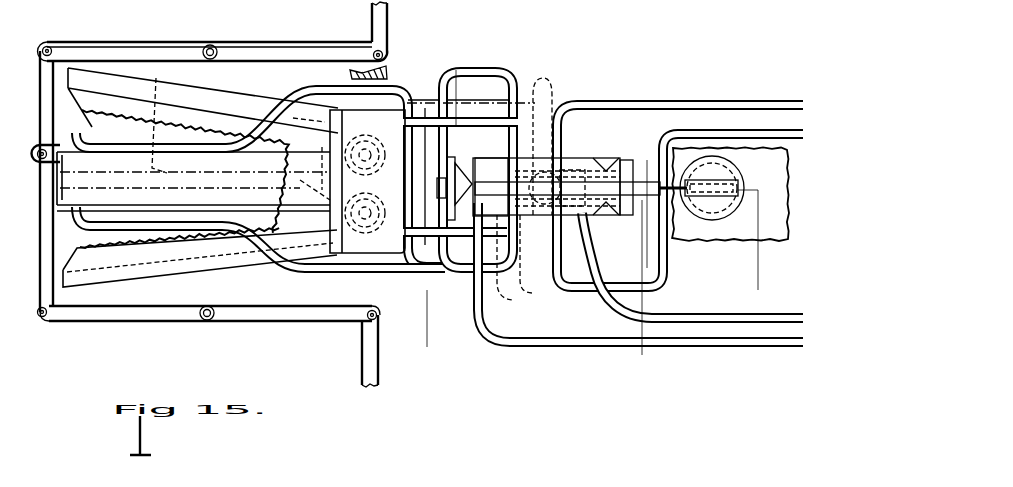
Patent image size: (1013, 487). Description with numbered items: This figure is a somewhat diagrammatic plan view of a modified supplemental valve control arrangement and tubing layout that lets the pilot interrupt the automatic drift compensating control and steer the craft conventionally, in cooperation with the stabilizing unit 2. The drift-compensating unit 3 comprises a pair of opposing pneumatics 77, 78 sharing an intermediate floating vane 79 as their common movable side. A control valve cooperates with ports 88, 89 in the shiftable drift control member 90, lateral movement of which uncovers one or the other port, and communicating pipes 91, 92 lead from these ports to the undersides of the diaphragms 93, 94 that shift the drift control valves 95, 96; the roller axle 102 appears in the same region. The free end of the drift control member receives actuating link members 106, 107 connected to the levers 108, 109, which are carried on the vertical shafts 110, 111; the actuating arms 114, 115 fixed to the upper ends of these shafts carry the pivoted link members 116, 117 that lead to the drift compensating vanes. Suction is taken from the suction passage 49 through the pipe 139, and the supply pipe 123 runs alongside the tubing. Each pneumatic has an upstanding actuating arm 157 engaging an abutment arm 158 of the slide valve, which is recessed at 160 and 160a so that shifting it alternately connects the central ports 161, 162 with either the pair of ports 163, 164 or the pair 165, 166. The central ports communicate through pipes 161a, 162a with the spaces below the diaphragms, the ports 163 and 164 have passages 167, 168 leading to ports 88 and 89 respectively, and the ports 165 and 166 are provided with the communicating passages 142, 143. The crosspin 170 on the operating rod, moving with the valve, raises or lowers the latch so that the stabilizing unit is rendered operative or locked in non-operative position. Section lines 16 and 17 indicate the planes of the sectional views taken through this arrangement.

The stabilizing unit 2 is at (730, 203).
The drift-compensating unit 3 is at (320, 164).
The section line 16- 16 is at (534, 287).
The section line 17- 17 is at (762, 312).
The suction passage 49 is at (383, 74).
The pneumatic 77 is at (204, 275).
The pneumatic 78 is at (198, 95).
The floating vane 79 is at (157, 118).
The port 88 is at (87, 158).
The port 89 is at (85, 196).
The drift control member 90 is at (97, 70).
The pipe 91 is at (304, 89).
The pipe 92 is at (118, 244).
The diaphragm 93 is at (362, 156).
The diaphragm 94 is at (362, 212).
The drift control valve 95 is at (360, 150).
The drift control valve 96 is at (355, 228).
The roller axle 102 is at (362, 215).
The actuating link member 106 is at (50, 113).
The actuating link member 107 is at (40, 250).
The lever 108 is at (140, 44).
The lever 109 is at (98, 313).
The vertical shaft 110 is at (210, 46).
The vertical shaft 111 is at (205, 320).
The actuating arm 114 is at (297, 53).
The actuating arm 115 is at (331, 306).
The link member 116 is at (387, 20).
The link member 117 is at (363, 350).
The supply pipe 123 is at (681, 136).
The pipe 139 is at (477, 90).
The passage 142 is at (500, 344).
The passage 143 is at (608, 312).
The actuating arm 157 is at (463, 148).
The abutment arm 158 is at (474, 167).
The recess 160 is at (511, 265).
The recess 160a is at (540, 95).
The central port 161 is at (468, 254).
The pipe 161a is at (433, 256).
The central port 162 is at (552, 115).
The pipe 162a is at (456, 72).
The port 163 is at (523, 290).
The port 164 is at (500, 123).
The port 165 is at (558, 230).
The port 166 is at (560, 137).
The passage 167 is at (648, 160).
The passage 168 is at (712, 175).
The crosspin 170 is at (746, 186).